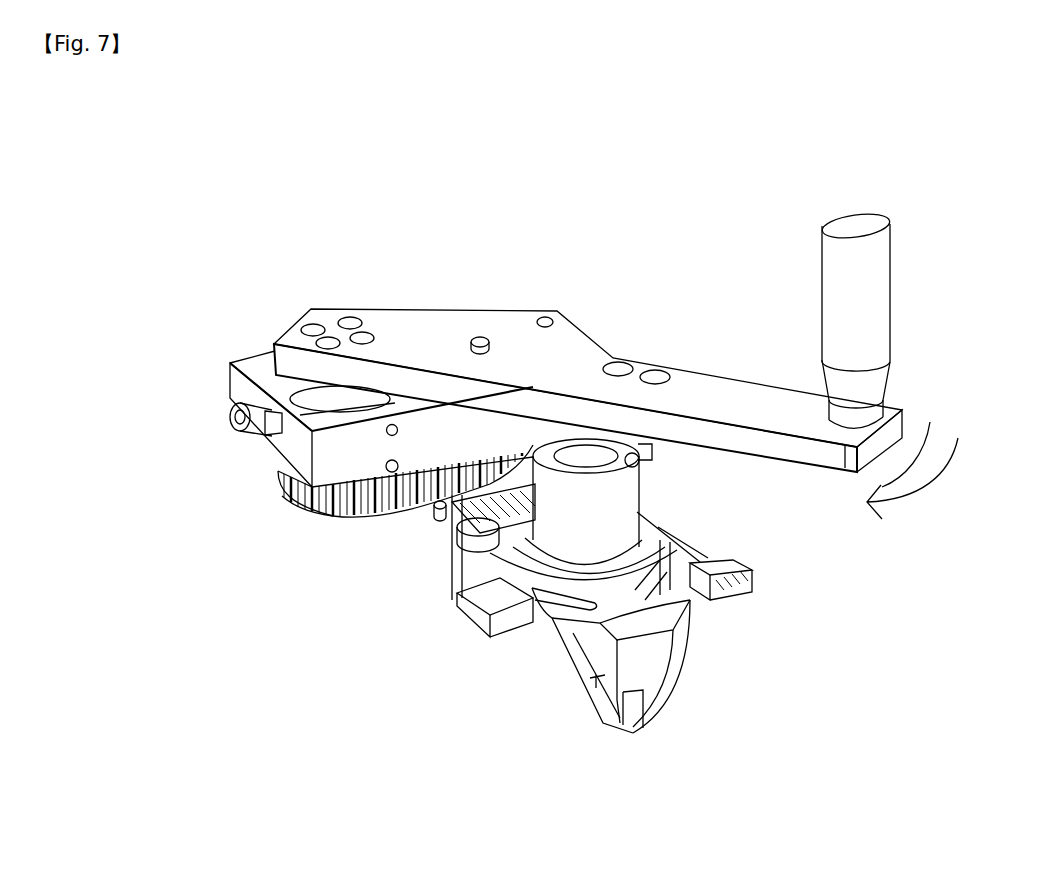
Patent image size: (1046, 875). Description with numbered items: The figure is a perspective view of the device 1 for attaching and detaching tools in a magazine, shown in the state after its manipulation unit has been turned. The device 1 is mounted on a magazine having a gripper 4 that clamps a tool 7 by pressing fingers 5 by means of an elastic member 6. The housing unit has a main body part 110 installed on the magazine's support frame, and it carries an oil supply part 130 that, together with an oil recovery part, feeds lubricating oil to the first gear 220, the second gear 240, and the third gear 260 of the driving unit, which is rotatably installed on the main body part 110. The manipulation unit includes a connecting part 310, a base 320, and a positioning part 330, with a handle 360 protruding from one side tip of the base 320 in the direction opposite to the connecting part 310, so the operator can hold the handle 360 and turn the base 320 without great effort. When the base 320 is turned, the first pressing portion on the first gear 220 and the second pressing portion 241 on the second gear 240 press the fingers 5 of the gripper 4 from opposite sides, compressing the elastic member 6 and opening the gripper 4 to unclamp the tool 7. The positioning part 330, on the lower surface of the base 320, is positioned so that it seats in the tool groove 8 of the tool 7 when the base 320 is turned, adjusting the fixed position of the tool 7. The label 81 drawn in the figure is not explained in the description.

The device for attaching and detaching tools in a magazine 1 is at (228, 160).
The main body part 110 is at (262, 464).
The oil supply part 130 is at (237, 428).
The connecting part 310 is at (230, 368).
The base 320 is at (530, 363).
The positioning part 330 is at (640, 440).
The handle 360 is at (845, 268).
The first gear 220 is at (517, 458).
The second gear 240 is at (338, 517).
The second pressing portion 241 is at (437, 522).
The third gear 260 is at (296, 508).
The fingers 5 is at (455, 522).
The elastic member 6 is at (456, 597).
The gripper 4 is at (505, 622).
The tool 7 is at (617, 508).
The tool groove 8 is at (641, 471).
The stopper block 81 is at (694, 556).